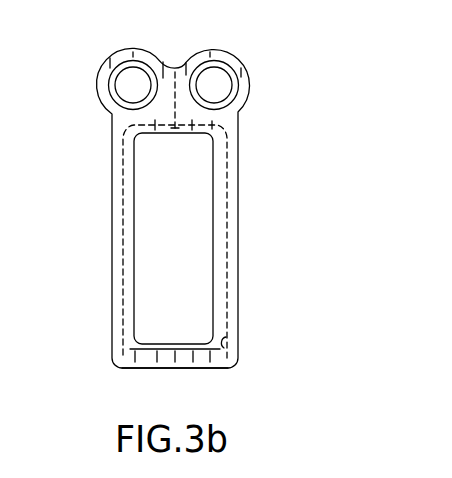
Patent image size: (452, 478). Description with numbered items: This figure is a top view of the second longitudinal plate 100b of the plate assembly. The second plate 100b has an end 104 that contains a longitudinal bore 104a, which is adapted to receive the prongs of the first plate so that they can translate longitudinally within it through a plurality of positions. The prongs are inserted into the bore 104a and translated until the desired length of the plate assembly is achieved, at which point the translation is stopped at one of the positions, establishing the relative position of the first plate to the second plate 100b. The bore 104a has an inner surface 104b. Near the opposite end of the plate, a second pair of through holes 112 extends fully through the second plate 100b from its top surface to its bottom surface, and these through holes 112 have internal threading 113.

The second longitudinal plate 100b is at (246, 229).
The second pair of through holes 112 is at (128, 98).
The internal threading 113 is at (131, 77).
The end 104 is at (159, 378).
The longitudinal bore 104a is at (215, 362).
The inner surface 104b is at (224, 348).